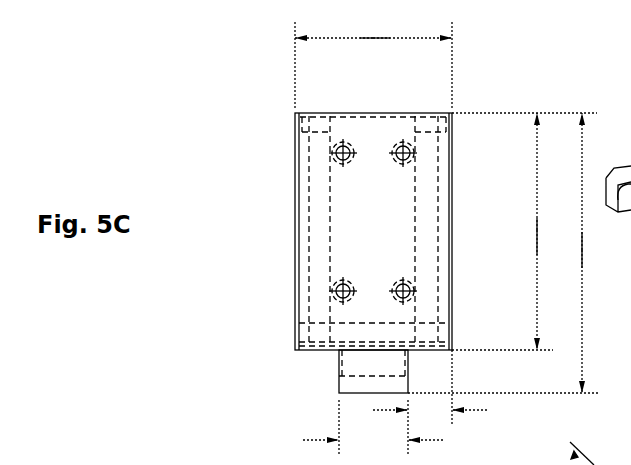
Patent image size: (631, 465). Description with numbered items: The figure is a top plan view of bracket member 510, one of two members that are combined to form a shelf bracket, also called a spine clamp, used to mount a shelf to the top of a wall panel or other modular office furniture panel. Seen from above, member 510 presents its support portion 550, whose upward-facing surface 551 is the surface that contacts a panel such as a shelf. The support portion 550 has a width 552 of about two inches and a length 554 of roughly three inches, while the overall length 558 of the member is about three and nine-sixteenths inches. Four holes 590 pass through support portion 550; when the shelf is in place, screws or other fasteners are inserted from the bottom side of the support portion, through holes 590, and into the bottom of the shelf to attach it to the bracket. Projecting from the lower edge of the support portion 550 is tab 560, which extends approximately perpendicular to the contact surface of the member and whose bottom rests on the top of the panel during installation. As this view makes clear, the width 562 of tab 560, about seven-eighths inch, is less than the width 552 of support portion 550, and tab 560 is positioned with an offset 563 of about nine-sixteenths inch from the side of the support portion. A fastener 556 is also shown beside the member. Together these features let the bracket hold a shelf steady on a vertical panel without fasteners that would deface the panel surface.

The bracket member 510 is at (225, 160).
The support portion 550 is at (296, 256).
The surface 551 is at (391, 233).
The width 552 is at (349, 38).
The length 554 is at (537, 186).
The fastener 556 is at (619, 192).
The length 558 is at (582, 280).
The tab 560 is at (339, 385).
The width 562 is at (373, 427).
The offset 563 is at (449, 387).
The holes 590 is at (338, 157).